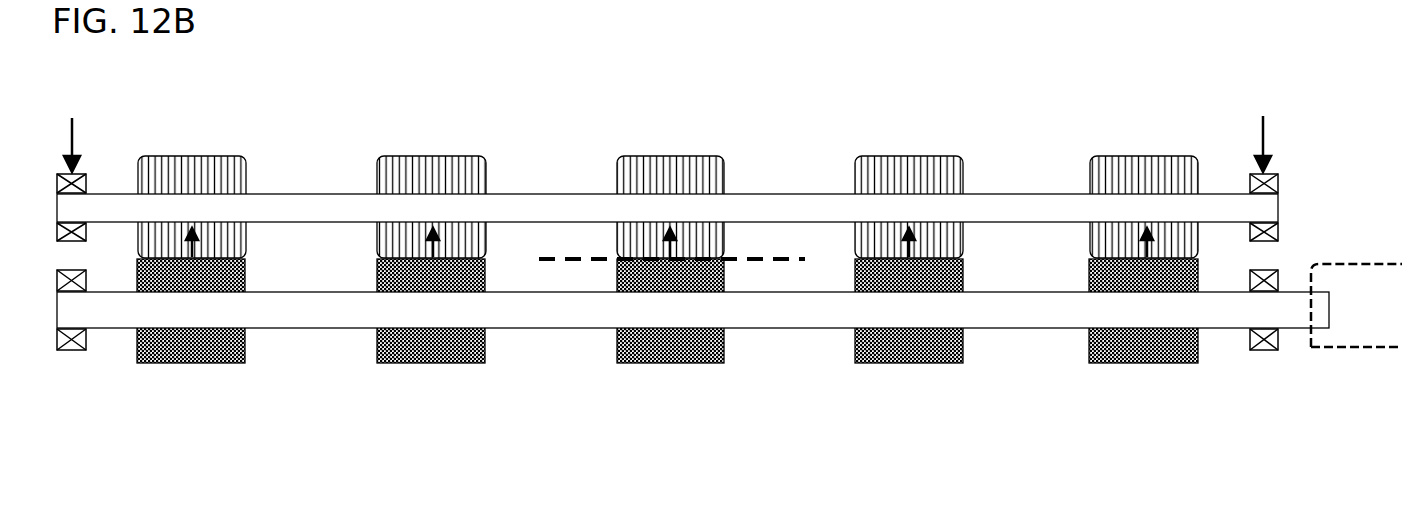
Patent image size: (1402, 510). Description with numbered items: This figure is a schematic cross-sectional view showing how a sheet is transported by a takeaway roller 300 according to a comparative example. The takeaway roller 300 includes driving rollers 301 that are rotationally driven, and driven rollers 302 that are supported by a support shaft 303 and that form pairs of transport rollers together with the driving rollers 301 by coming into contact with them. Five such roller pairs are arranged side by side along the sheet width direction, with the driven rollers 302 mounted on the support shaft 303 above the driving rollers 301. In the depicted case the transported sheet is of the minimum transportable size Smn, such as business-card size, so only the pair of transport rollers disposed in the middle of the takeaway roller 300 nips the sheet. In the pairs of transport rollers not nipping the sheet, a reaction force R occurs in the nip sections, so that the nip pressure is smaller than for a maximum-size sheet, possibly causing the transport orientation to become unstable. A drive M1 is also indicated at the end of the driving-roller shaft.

The takeaway roller 300 is at (302, 157).
The driving rollers 301 is at (178, 345).
The driven rollers 302 is at (188, 168).
The support shaft 303 is at (1050, 203).
The motor M1 is at (1388, 320).
The minimum transportable size Smn is at (600, 262).
The reaction force R is at (679, 242).